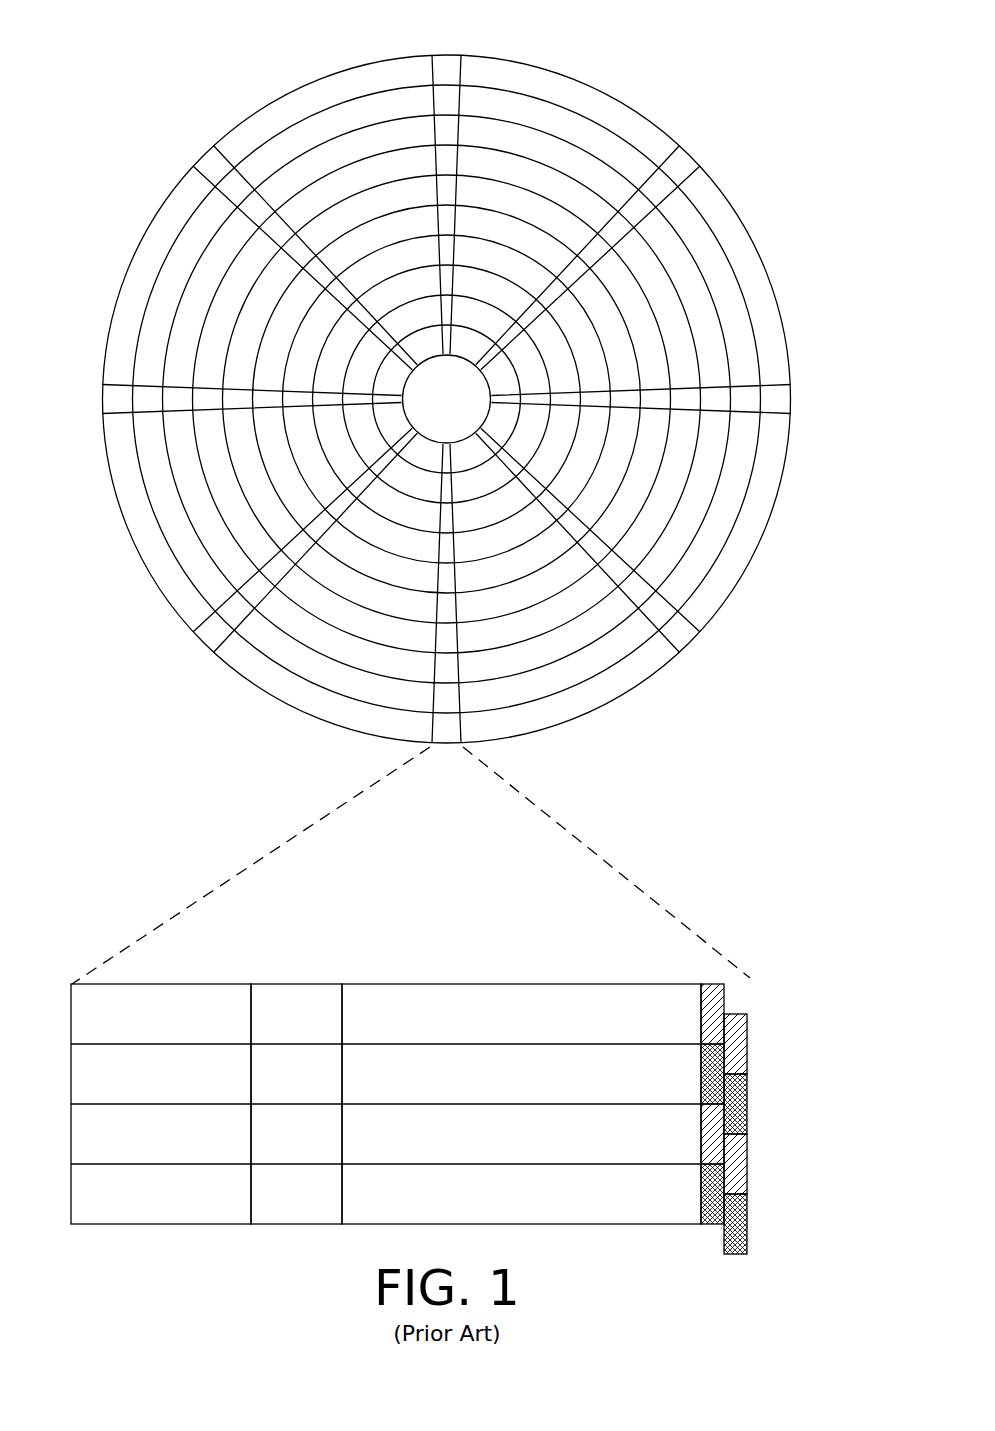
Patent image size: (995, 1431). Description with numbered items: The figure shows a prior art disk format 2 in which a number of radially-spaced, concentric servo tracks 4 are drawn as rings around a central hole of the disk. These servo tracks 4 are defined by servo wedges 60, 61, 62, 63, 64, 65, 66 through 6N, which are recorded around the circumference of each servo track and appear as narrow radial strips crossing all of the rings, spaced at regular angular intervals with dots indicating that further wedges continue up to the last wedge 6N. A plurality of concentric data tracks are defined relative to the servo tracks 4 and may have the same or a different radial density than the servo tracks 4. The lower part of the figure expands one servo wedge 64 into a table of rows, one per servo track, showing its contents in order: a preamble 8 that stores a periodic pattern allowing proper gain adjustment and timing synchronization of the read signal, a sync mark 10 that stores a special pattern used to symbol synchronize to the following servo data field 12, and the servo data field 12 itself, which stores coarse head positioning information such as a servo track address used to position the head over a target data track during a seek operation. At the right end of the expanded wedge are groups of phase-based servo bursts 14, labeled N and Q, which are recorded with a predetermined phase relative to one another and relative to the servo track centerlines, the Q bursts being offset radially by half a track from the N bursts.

The disk format 2 is at (447, 373).
The servo tracks 4 is at (563, 125).
The servo wedge 60 is at (447, 68).
The servo wedge 61 is at (683, 163).
The servo wedge 62 is at (782, 402).
The servo wedge 63 is at (690, 640).
The servo wedge 64 is at (294, 825).
The servo wedge 65 is at (208, 638).
The servo wedge 66 is at (108, 400).
The servo wedge 6N is at (208, 157).
The preamble 8 is at (170, 984).
The sync mark 10 is at (300, 984).
The servo data field 12 is at (510, 984).
The servo bursts 14 is at (740, 983).